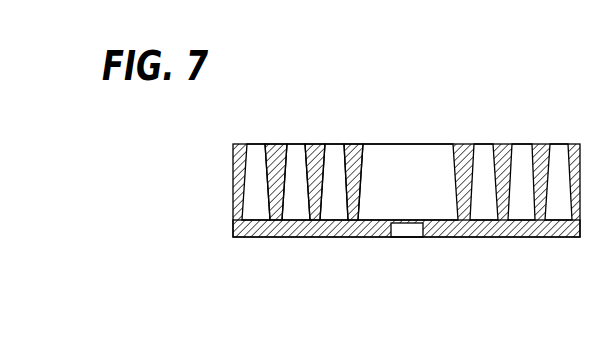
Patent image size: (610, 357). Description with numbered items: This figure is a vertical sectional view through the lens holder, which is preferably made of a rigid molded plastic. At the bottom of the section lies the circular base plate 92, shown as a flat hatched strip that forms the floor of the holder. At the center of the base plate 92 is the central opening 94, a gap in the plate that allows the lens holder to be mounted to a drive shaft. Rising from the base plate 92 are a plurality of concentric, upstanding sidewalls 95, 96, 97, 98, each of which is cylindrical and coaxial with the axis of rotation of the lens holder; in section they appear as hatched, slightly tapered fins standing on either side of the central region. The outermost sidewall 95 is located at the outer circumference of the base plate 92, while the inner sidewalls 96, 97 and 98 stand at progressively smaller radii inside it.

The base plate 92 is at (332, 238).
The central opening 94 is at (402, 232).
The outermost sidewall 95 is at (233, 170).
The sidewall 96 is at (280, 143).
The sidewall 97 is at (320, 143).
The sidewall 98 is at (347, 143).